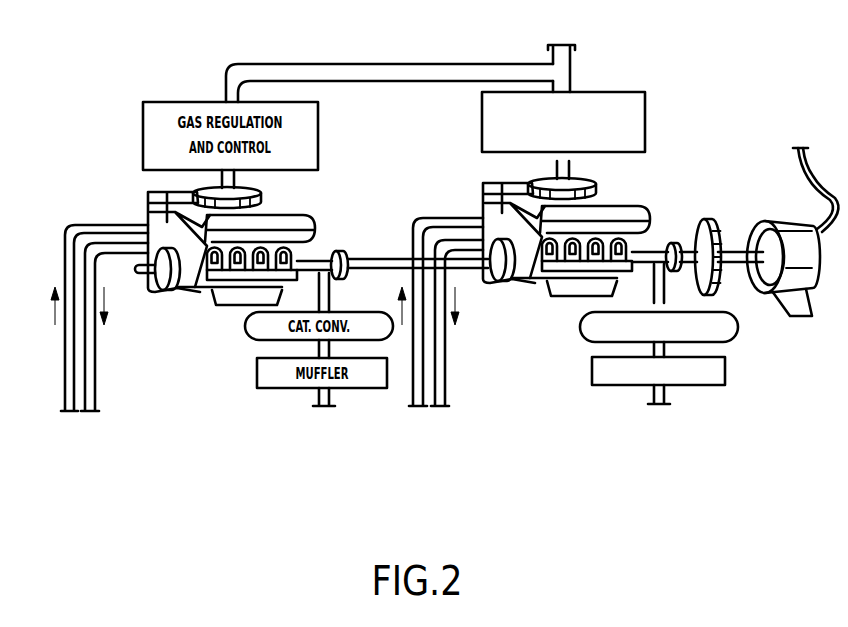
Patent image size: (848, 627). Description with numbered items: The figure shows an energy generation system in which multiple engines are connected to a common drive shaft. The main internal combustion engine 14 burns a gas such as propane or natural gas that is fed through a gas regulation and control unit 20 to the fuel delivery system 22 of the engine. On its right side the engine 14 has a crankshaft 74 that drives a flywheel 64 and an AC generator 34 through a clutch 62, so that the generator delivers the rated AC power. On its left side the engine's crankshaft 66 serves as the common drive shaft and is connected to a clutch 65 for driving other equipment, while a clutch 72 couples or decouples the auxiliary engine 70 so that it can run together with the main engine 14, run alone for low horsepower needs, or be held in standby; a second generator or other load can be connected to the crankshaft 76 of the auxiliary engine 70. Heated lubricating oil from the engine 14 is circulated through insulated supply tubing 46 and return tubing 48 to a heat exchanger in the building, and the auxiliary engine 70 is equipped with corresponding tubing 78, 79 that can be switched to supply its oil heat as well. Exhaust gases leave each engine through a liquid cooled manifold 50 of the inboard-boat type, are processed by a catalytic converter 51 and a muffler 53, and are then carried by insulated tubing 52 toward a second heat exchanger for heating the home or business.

The internal combustion engine 14 is at (573, 252).
The gas regulation and control unit 20 is at (482, 119).
The fuel delivery system 22 is at (579, 180).
The AC generator 34 is at (813, 267).
The insulated supply tubing 46 is at (448, 372).
The return tubing 48 is at (408, 393).
The liquid cooled manifold 50 is at (587, 289).
The catalytic converter 51 is at (741, 326).
The insulated tubing 52 is at (664, 393).
The muffler 53 is at (727, 373).
The clutch 62 is at (676, 240).
The flywheel 64 is at (716, 216).
The clutch 65 is at (514, 291).
The common drive shaft 66 is at (468, 272).
The auxiliary engine 70 is at (228, 288).
The clutch 72 is at (337, 247).
The crankshaft 74 is at (651, 243).
The crankshaft 76 is at (148, 283).
The tubing 78 is at (97, 372).
The tubing 79 is at (64, 376).